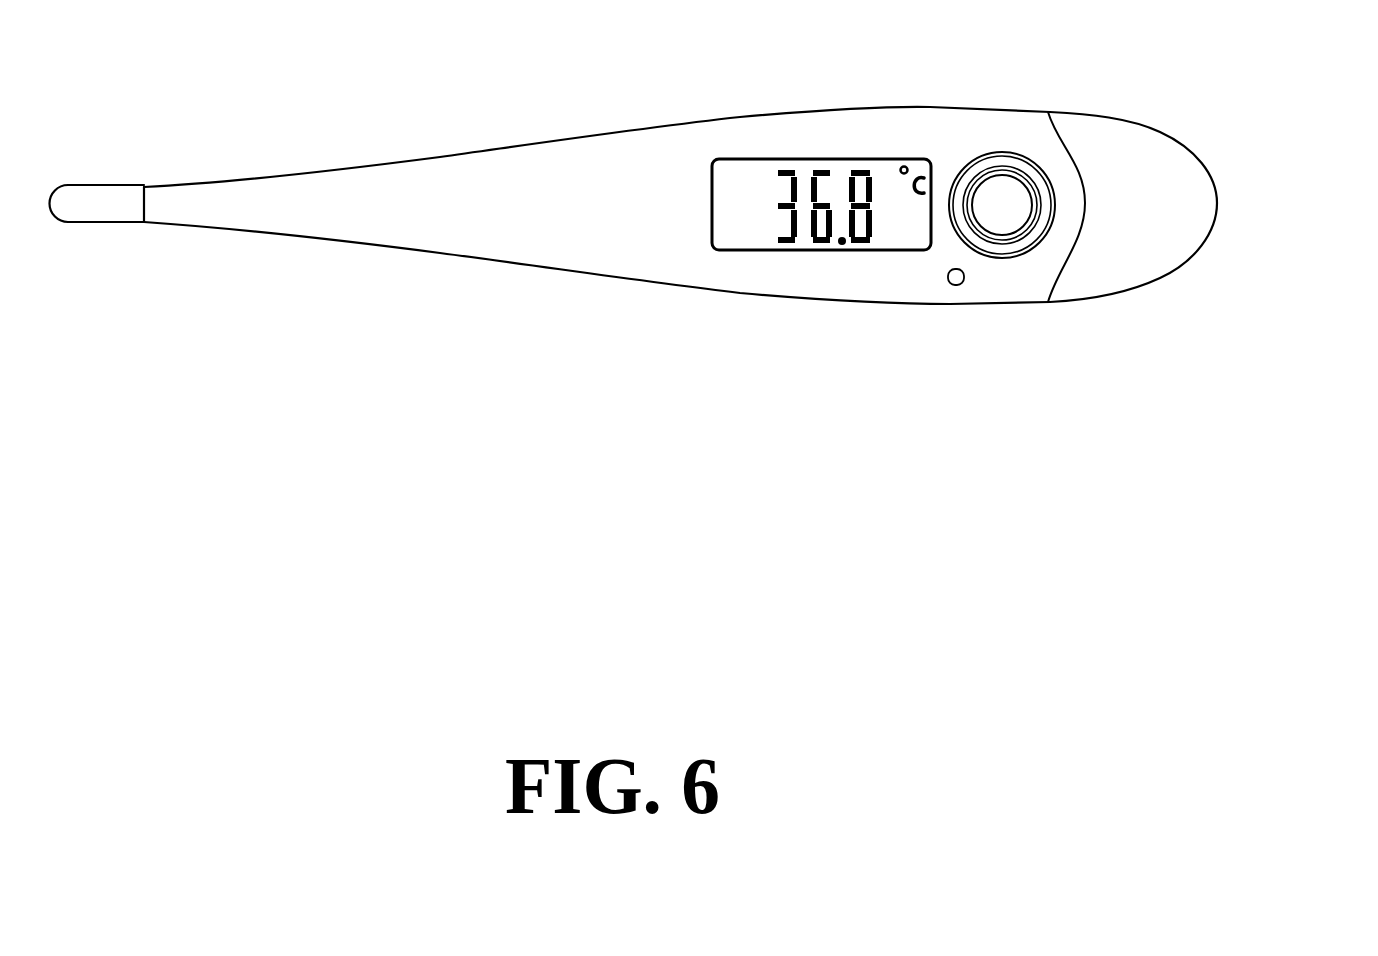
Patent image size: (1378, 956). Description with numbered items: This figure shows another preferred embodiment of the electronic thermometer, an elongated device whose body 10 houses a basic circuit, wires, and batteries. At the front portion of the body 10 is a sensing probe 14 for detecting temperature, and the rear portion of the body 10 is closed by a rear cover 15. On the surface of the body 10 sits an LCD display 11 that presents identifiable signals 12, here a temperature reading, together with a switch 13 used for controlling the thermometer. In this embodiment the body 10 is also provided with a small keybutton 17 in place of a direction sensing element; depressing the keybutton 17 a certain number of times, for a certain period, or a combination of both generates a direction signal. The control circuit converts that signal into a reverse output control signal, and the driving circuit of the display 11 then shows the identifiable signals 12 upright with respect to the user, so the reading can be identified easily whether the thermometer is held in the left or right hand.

The body 10 is at (632, 170).
The LCD display 11 is at (737, 233).
The identifiable signals 12 is at (816, 250).
The switch 13 is at (1007, 213).
The sensing probe 14 is at (103, 208).
The rear cover 15 is at (1183, 233).
The keybutton 17 is at (955, 286).